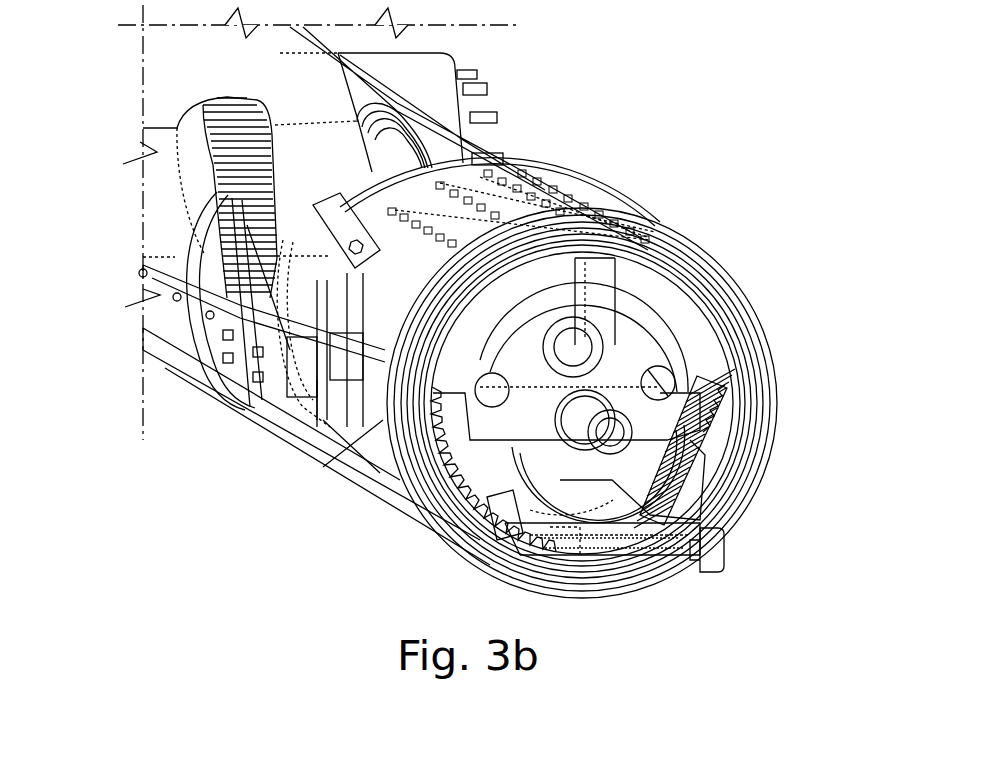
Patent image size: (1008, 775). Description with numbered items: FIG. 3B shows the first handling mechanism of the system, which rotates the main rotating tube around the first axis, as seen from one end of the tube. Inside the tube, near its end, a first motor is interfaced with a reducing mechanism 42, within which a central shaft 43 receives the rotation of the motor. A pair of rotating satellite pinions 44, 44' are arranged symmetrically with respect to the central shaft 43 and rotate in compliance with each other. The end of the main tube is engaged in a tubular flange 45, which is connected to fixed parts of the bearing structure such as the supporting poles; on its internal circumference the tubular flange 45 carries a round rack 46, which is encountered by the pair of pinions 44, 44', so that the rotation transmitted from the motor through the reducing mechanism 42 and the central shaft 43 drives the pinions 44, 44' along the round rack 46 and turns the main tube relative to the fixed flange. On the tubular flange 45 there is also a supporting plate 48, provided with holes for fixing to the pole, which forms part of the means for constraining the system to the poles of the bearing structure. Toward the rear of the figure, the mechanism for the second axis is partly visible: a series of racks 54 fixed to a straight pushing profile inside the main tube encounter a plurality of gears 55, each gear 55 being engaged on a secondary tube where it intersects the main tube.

The reducing mechanism 42 is at (507, 213).
The central shaft 43 is at (703, 463).
The rotating satellite pinion 44 is at (503, 475).
The rotating satellite pinion 44' is at (789, 382).
The tubular flange 45 is at (485, 563).
The round rack 46 is at (720, 440).
The supporting plate 48 is at (723, 563).
The rack 54 is at (150, 278).
The gear 55 is at (215, 100).